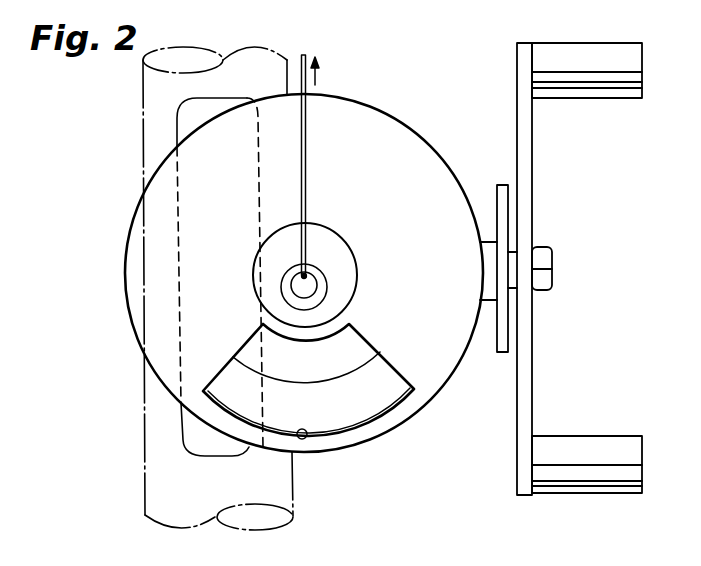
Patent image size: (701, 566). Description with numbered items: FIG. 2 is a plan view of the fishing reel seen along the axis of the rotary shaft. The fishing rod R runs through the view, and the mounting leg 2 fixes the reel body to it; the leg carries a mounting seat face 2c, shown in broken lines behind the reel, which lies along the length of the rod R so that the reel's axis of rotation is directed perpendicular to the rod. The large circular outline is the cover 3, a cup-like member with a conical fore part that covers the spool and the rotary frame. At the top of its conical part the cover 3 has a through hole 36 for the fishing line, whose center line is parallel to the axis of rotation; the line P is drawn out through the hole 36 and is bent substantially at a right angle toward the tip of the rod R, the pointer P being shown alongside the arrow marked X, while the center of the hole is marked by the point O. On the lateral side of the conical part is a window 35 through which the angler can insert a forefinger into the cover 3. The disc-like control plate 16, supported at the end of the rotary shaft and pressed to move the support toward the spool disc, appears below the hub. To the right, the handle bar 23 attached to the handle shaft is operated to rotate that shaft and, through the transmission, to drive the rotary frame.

The fishing rod R is at (143, 117).
The mounting leg 2 is at (210, 443).
The mounting seat face 2c is at (196, 231).
The cover 3 is at (160, 347).
The through hole 36 is at (313, 282).
The center of rotation O is at (306, 275).
The line P is at (307, 136).
The direction arrow X is at (324, 66).
The control plate 16 is at (341, 367).
The window 35 is at (311, 437).
The handle bar 23 is at (525, 156).